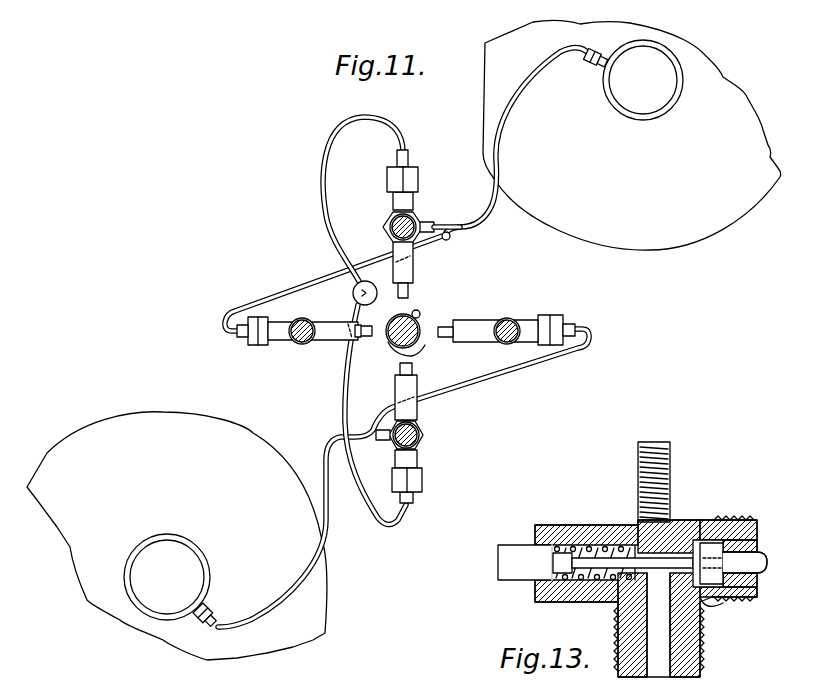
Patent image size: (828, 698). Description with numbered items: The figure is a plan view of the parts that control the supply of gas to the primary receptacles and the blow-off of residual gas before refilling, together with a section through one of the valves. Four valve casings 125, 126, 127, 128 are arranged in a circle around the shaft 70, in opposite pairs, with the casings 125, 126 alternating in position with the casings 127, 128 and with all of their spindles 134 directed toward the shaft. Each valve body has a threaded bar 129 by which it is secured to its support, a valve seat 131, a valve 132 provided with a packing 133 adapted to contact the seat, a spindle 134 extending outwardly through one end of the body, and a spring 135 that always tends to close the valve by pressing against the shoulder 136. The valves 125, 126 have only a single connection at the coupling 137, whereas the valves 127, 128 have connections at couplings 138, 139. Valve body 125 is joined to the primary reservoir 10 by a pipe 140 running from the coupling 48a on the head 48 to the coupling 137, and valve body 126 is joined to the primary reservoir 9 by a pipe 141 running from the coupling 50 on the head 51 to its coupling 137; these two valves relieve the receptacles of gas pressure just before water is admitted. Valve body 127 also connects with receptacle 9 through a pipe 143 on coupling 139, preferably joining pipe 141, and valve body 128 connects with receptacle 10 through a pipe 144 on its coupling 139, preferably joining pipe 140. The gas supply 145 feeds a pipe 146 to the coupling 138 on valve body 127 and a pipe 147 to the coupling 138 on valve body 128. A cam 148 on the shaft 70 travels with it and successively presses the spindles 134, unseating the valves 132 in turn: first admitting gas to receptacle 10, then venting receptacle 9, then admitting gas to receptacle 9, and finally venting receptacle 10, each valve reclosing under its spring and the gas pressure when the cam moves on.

In FIG. 11, the primary reservoir 9 is at (632, 135).
In FIG. 11, the primary reservoir 10 is at (177, 536).
In FIG. 11, the head 48 is at (177, 563).
In FIG. 11, the coupling 48a is at (223, 600).
In FIG. 11, the coupling 50 is at (592, 66).
In FIG. 11, the head 51 is at (643, 107).
In FIG. 11, the shaft 70 is at (418, 320).
In FIG. 11, the valve casing 125 is at (488, 344).
In FIG. 11, the valve casing 126 is at (320, 345).
In FIG. 11, the valve casing 127 is at (425, 245).
In FIG. 11, the valve casing 128 is at (433, 433).
In FIG. 13, the threaded bar 129 is at (672, 476).
In FIG. 13, the valve seat 131 is at (698, 540).
In FIG. 13, the valve 132 is at (718, 590).
In FIG. 13, the packing 133 is at (712, 605).
In FIG. 11, the spindle 134 is at (374, 349).
In FIG. 13, the spindle 134 is at (600, 563).
In FIG. 13, the spring 135 is at (583, 587).
In FIG. 13, the shoulder 136 is at (552, 573).
In FIG. 11, the coupling 137 is at (262, 348).
In FIG. 11, the coupling 138 is at (416, 184).
In FIG. 11, the coupling 139 is at (421, 216).
In FIG. 11, the pipe 140 is at (497, 377).
In FIG. 11, the pipe 141 is at (505, 139).
In FIG. 11, the pipe 143 is at (452, 238).
In FIG. 11, the pipe 144 is at (395, 450).
In FIG. 11, the gas supply 145 is at (353, 296).
In FIG. 11, the pipe 146 is at (323, 198).
In FIG. 11, the pipe 147 is at (352, 372).
In FIG. 11, the cam 148 is at (428, 350).